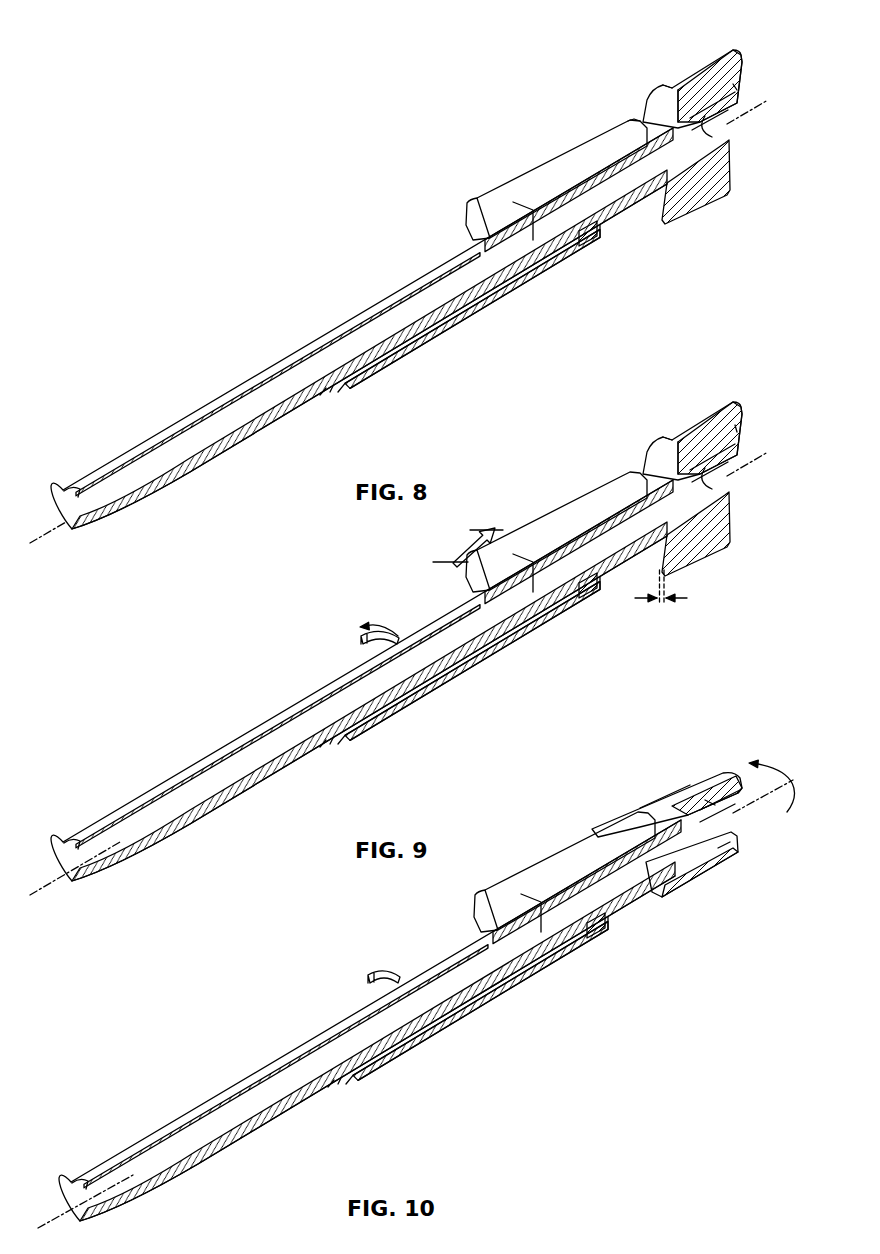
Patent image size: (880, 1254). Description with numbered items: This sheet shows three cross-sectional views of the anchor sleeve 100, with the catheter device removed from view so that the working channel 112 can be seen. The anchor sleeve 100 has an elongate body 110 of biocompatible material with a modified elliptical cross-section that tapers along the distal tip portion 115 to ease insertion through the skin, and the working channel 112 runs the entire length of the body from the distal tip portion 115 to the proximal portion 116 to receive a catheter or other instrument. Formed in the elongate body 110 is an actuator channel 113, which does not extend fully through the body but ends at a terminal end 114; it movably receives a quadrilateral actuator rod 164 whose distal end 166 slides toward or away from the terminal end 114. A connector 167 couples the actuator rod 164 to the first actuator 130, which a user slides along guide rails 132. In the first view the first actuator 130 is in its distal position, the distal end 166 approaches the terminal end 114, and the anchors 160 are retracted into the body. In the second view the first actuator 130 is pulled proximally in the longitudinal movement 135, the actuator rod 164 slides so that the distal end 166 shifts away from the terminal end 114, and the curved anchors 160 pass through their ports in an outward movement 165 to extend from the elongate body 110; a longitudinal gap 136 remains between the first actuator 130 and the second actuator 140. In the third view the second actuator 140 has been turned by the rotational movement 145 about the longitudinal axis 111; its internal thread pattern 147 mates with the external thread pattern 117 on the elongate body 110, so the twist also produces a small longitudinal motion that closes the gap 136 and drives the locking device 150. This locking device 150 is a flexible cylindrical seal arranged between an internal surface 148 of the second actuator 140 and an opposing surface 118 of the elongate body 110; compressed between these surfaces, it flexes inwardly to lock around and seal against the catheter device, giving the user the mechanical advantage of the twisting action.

In FIG. 8, the anchor sleeve 100 is at (191, 232).
In FIG. 9, the anchor sleeve 100 is at (136, 675).
In FIG. 10, the anchor sleeve 100 is at (136, 1020).
In FIG. 8, the elongate body 110 is at (437, 270).
In FIG. 9, the elongate body 110 is at (437, 622).
In FIG. 10, the elongate body 110 is at (323, 1032).
In FIG. 8, the longitudinal axis 111 is at (760, 103).
In FIG. 9, the longitudinal axis 111 is at (760, 462).
In FIG. 10, the longitudinal axis 111 is at (53, 1225).
In FIG. 8, the working channel 112 is at (160, 467).
In FIG. 9, the working channel 112 is at (160, 819).
In FIG. 10, the working channel 112 is at (170, 1153).
In FIG. 8, the actuator channel 113 is at (360, 372).
In FIG. 9, the actuator channel 113 is at (360, 724).
In FIG. 10, the actuator channel 113 is at (367, 1060).
In FIG. 8, the terminal end 114 is at (320, 395).
In FIG. 9, the terminal end 114 is at (320, 747).
In FIG. 10, the terminal end 114 is at (323, 1087).
In FIG. 8, the distal tip portion 115 is at (188, 414).
In FIG. 9, the distal tip portion 115 is at (188, 766).
In FIG. 10, the distal tip portion 115 is at (197, 1105).
In FIG. 8, the proximal portion 116 is at (748, 158).
In FIG. 9, the proximal portion 116 is at (745, 497).
In FIG. 8, the external thread pattern 117 is at (733, 84).
In FIG. 9, the external thread pattern 117 is at (735, 425).
In FIG. 10, the external thread pattern 117 is at (710, 803).
In FIG. 10, the opposing surface 118 is at (712, 865).
In FIG. 8, the first actuator 130 is at (563, 160).
In FIG. 9, the first actuator 130 is at (563, 512).
In FIG. 10, the first actuator 130 is at (565, 852).
In FIG. 8, the guide rails 132 is at (625, 137).
In FIG. 9, the longitudinal movement 135 is at (462, 552).
In FIG. 9, the longitudinal gap 136 is at (657, 604).
In FIG. 8, the second actuator 140 is at (720, 60).
In FIG. 9, the second actuator 140 is at (720, 412).
In FIG. 10, the second actuator 140 is at (678, 774).
In FIG. 10, the rotational movement 145 is at (777, 762).
In FIG. 8, the internal thread pattern 147 is at (681, 125).
In FIG. 9, the internal thread pattern 147 is at (678, 475).
In FIG. 10, the internal thread pattern 147 is at (660, 810).
In FIG. 10, the internal surface 148 is at (725, 852).
In FIG. 8, the locking device 150 is at (733, 135).
In FIG. 9, the locking device 150 is at (723, 473).
In FIG. 10, the locking device 150 is at (732, 820).
In FIG. 9, the anchors 160 is at (362, 647).
In FIG. 10, the anchors 160 is at (372, 985).
In FIG. 8, the actuator rod 164 is at (507, 284).
In FIG. 9, the actuator rod 164 is at (509, 636).
In FIG. 10, the actuator rod 164 is at (519, 978).
In FIG. 9, the outward movement 165 is at (395, 632).
In FIG. 8, the distal end 166 is at (393, 353).
In FIG. 9, the distal end 166 is at (393, 705).
In FIG. 10, the distal end 166 is at (400, 1042).
In FIG. 8, the connector 167 is at (584, 246).
In FIG. 9, the connector 167 is at (628, 598).
In FIG. 10, the connector 167 is at (635, 912).